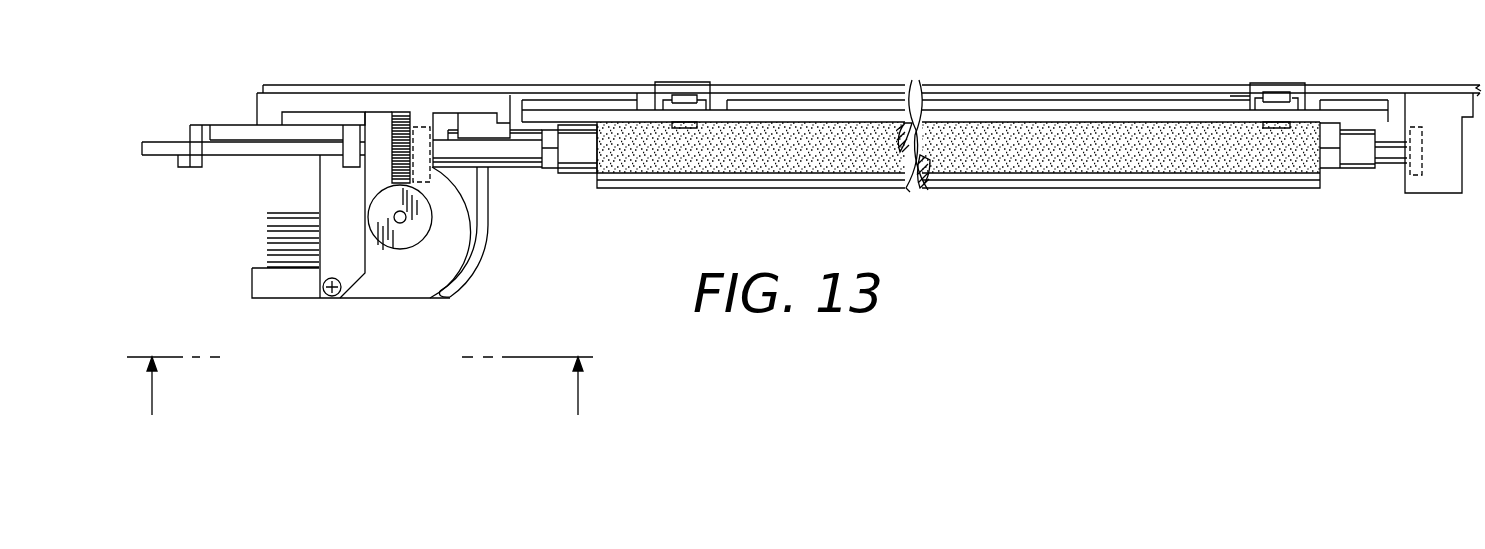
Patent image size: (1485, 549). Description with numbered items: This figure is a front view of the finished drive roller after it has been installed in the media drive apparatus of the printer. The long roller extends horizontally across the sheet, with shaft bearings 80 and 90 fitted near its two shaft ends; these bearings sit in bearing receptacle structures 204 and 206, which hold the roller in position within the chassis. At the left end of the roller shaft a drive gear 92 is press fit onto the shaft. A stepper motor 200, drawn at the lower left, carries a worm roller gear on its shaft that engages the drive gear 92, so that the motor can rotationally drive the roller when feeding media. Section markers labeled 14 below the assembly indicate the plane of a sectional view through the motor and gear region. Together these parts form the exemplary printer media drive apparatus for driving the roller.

The bearing 80 is at (1421, 130).
The bearing 90 is at (422, 125).
The drive gear 92 is at (400, 125).
The stepper motor 200 is at (397, 275).
The bearing receptacle structure 204 is at (1423, 186).
The bearing receptacle structure 206 is at (460, 203).
The section line 14- 14 is at (369, 411).